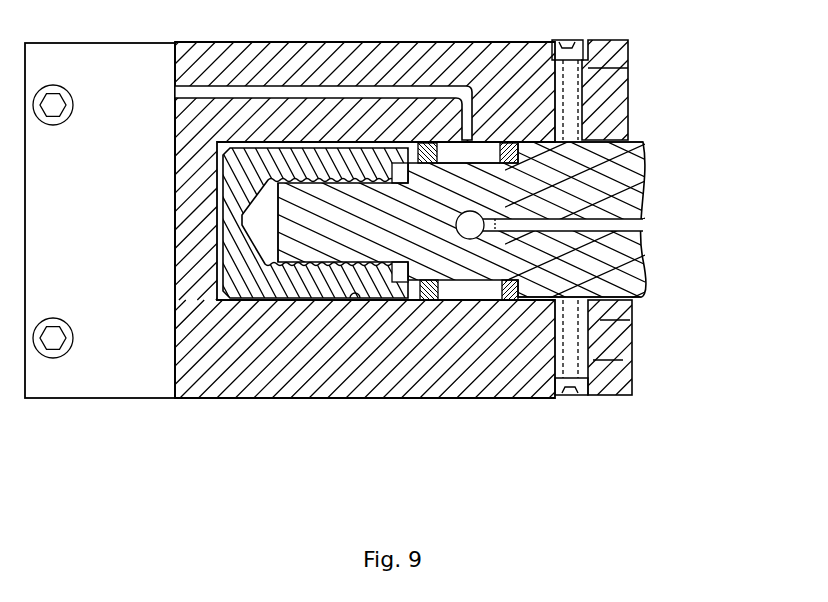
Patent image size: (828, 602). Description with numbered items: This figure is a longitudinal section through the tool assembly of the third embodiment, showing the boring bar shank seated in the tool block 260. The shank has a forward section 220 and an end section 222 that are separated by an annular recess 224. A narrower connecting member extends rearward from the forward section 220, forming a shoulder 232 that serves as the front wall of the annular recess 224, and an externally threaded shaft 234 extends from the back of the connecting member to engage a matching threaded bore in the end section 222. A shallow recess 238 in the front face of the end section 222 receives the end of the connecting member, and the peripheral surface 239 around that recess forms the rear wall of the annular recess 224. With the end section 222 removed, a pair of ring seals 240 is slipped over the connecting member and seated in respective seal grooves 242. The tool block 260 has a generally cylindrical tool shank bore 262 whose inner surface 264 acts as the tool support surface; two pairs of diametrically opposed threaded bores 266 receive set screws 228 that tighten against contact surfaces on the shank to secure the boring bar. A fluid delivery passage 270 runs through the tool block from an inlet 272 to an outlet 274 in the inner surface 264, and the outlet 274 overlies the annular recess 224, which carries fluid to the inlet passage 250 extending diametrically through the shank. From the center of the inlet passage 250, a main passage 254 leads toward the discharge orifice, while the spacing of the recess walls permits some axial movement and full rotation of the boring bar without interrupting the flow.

The forward section 220 is at (628, 145).
The end section 222 is at (263, 296).
The annular recess 224 is at (478, 290).
The set screws 228 is at (628, 55).
The shoulder 232 is at (528, 148).
The externally threaded shaft 234 is at (278, 232).
The shallow recess 238 is at (405, 290).
The peripheral surface 239 is at (403, 142).
The ring seals 240 is at (642, 233).
The seal grooves 242 is at (482, 153).
The inlet passage 250 is at (648, 148).
The main passage 254 is at (640, 196).
The tool block 260 is at (543, 383).
The tool shank bore 262 is at (175, 337).
The inner surface 264 is at (355, 298).
The bores 266 is at (630, 68).
The fluid delivery passage 270 is at (283, 97).
The inlet 272 is at (175, 93).
The outlet 274 is at (441, 151).